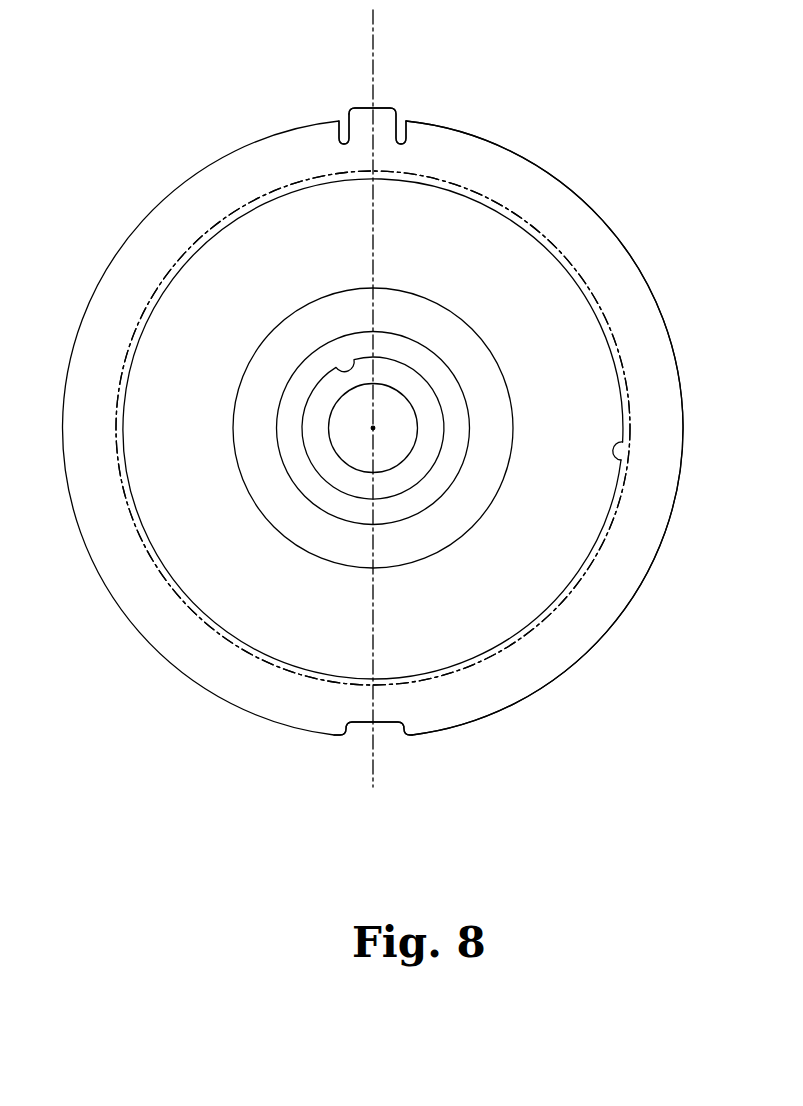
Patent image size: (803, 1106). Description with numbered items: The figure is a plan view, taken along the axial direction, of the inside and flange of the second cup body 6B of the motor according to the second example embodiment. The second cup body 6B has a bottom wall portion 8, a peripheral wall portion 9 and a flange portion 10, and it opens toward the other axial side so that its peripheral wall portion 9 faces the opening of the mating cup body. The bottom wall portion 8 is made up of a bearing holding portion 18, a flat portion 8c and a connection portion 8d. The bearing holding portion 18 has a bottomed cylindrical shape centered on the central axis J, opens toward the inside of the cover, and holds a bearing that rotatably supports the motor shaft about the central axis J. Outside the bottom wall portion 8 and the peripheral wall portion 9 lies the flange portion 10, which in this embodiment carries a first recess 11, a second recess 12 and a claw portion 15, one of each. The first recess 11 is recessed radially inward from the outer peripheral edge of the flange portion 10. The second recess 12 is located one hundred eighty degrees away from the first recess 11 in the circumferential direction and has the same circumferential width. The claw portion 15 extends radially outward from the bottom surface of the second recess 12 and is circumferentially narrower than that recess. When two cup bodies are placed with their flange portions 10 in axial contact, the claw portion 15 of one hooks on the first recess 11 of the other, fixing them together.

The second cup body 6B is at (577, 106).
The bottom wall portion 8 is at (538, 552).
The flat portion 8c is at (210, 277).
The connection portion 8d is at (270, 370).
The peripheral wall portion 9 is at (632, 459).
The flange portion 10 is at (602, 252).
The first recess 11 is at (387, 722).
The second recess 12 is at (346, 128).
The claw portion 15 is at (383, 108).
The bearing holding portion 18 is at (340, 377).
The central axis J is at (373, 428).